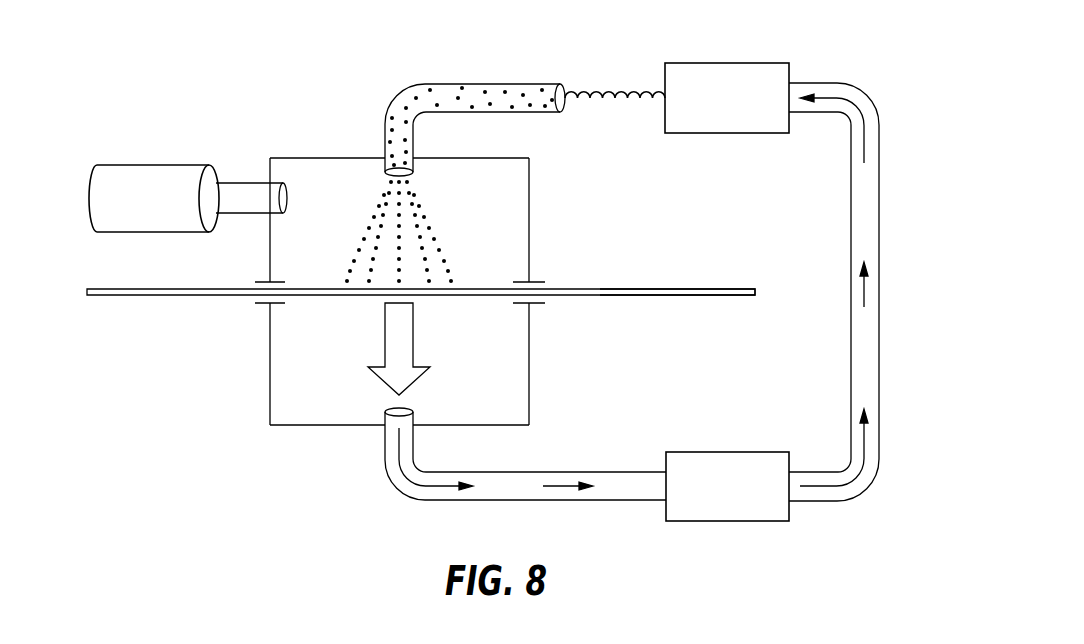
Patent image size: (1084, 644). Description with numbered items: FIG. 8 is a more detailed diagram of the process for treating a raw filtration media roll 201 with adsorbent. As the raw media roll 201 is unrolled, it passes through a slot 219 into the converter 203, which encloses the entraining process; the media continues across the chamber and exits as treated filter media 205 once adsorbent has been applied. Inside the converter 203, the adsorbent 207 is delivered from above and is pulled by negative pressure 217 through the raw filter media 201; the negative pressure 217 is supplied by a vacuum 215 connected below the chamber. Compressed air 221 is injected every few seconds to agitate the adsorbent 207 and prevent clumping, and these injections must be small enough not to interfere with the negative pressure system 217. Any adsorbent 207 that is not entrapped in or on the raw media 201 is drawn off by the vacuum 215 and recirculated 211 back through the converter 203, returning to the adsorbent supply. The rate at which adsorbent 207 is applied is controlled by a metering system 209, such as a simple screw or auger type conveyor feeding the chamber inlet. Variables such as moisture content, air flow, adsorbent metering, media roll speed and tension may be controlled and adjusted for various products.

The raw filtration media roll 201 is at (173, 297).
The converter 203 is at (326, 157).
The treated filter media 205 is at (665, 289).
The adsorbent 207 is at (452, 200).
The metering system 209 is at (609, 88).
The recirculation 211 is at (880, 292).
The vacuum 215 is at (729, 452).
The negative pressure 217 is at (282, 247).
The slot 219 is at (263, 304).
The compressed air 221 is at (158, 163).